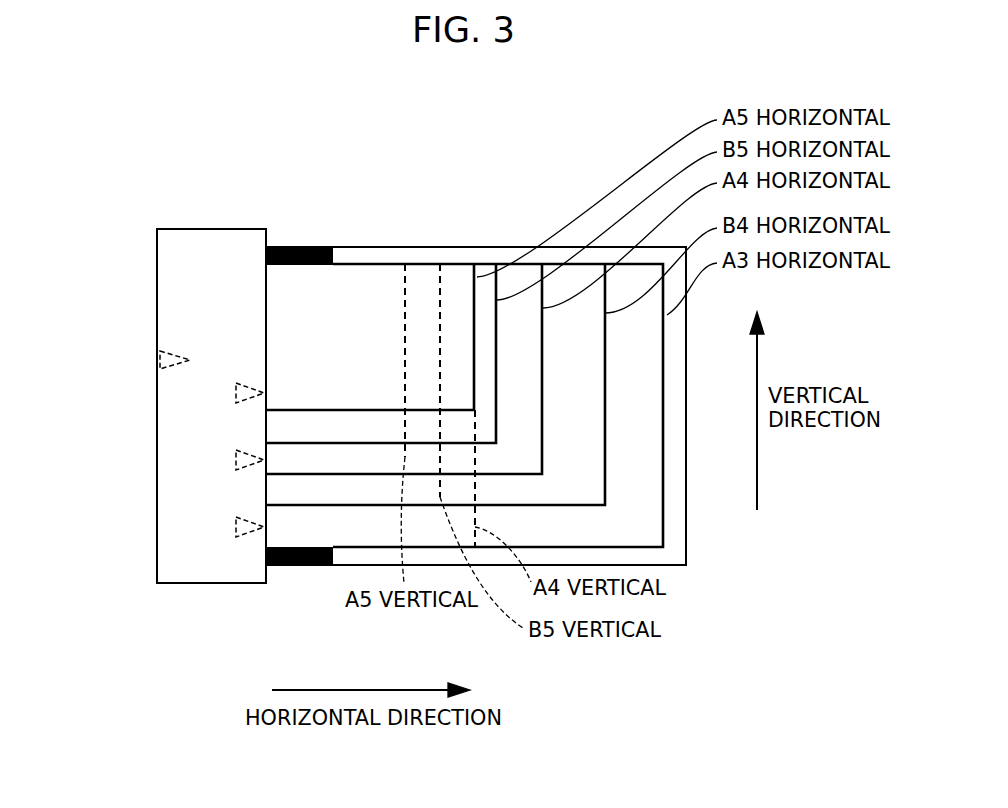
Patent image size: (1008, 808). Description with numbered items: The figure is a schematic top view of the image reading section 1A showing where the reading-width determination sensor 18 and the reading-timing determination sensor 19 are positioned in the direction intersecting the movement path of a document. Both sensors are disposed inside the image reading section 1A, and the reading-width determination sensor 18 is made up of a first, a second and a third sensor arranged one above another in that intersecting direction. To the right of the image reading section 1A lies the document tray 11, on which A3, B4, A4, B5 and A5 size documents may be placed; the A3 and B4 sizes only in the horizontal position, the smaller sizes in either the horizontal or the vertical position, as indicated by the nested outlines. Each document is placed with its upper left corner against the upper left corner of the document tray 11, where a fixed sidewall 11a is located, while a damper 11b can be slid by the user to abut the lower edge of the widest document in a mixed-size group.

The image reading section 1A is at (387, 373).
The document tray 11 is at (687, 508).
The sidewall 11a is at (297, 247).
The damper 11b is at (302, 567).
The reading-width determination sensor 18 is at (148, 482).
The reading-timing determination sensor 19 is at (160, 360).